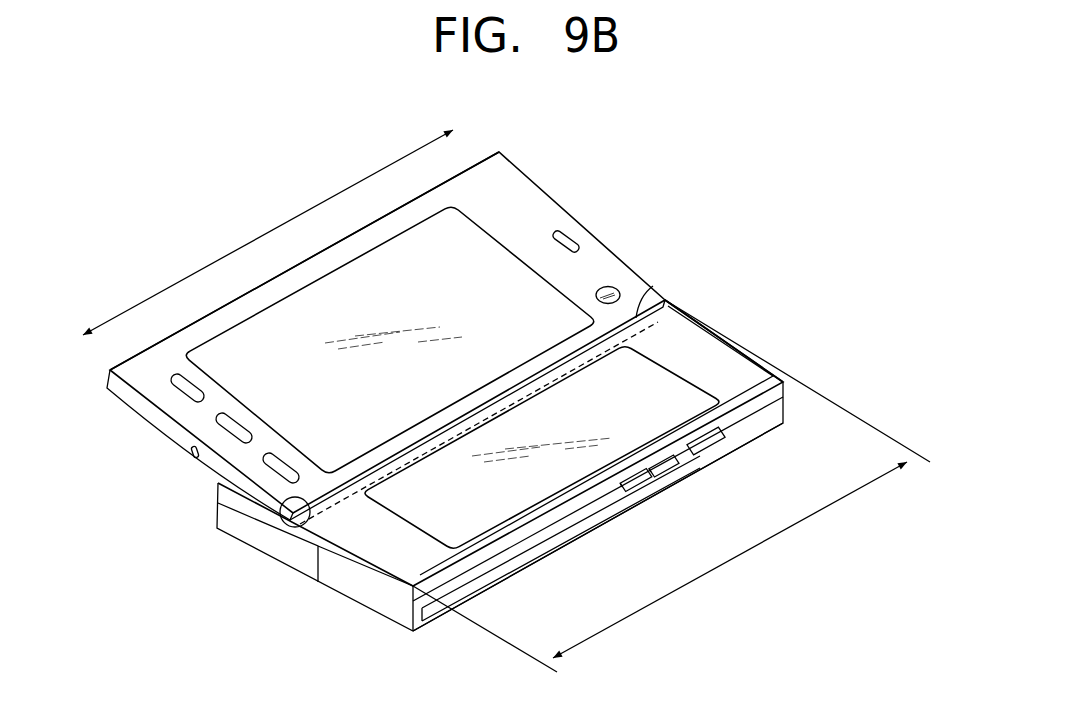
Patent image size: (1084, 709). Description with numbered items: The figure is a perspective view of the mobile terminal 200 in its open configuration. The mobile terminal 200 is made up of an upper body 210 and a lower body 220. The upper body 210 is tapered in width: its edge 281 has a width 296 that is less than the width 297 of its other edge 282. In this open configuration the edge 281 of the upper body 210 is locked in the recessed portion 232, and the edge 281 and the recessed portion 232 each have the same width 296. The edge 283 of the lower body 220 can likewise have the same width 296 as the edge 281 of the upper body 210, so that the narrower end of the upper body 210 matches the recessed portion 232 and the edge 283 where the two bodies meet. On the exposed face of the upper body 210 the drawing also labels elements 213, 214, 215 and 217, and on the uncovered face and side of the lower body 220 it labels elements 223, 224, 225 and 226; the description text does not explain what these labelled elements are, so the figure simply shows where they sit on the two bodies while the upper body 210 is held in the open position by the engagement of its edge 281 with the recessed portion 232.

The mobile terminal 200 is at (720, 168).
The upper body 210 is at (132, 418).
The first display unit 213 is at (468, 262).
The audio output unit 214 is at (567, 240).
The camera 215 is at (616, 289).
The manipulation units 217 is at (190, 392).
The lower body 220 is at (225, 547).
The second display unit 223 is at (660, 393).
The manipulation unit 224 is at (665, 467).
The manipulation unit 225 is at (710, 437).
The interface unit 226 is at (533, 557).
The recessed portion 232 is at (305, 527).
The edge of the upper body 281 is at (650, 284).
The edge of the upper body 282 is at (455, 173).
The edge of the lower body 283 is at (763, 388).
The width 296 is at (655, 605).
The width 297 is at (243, 246).